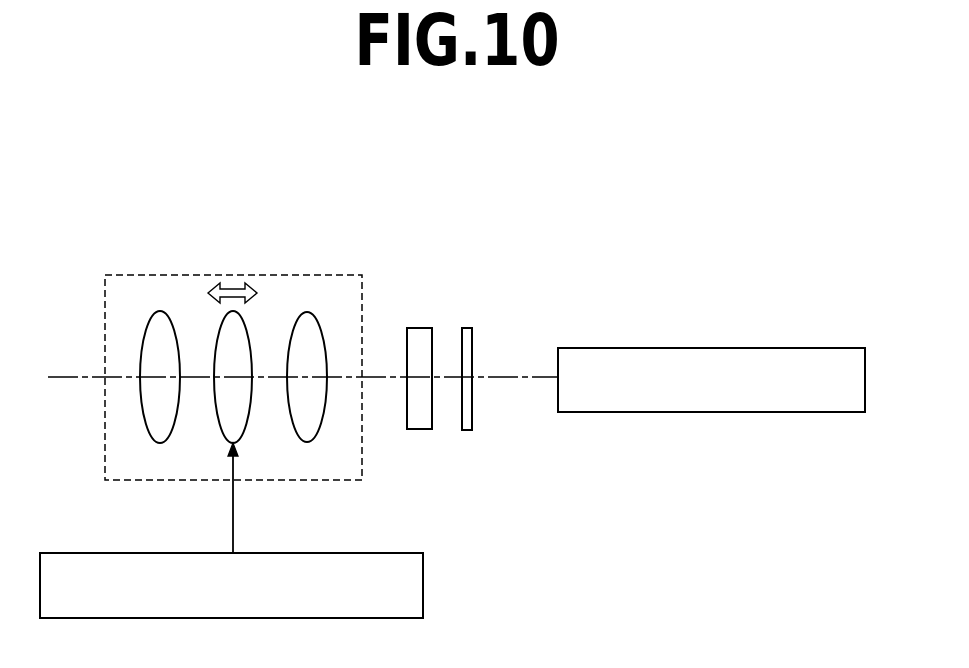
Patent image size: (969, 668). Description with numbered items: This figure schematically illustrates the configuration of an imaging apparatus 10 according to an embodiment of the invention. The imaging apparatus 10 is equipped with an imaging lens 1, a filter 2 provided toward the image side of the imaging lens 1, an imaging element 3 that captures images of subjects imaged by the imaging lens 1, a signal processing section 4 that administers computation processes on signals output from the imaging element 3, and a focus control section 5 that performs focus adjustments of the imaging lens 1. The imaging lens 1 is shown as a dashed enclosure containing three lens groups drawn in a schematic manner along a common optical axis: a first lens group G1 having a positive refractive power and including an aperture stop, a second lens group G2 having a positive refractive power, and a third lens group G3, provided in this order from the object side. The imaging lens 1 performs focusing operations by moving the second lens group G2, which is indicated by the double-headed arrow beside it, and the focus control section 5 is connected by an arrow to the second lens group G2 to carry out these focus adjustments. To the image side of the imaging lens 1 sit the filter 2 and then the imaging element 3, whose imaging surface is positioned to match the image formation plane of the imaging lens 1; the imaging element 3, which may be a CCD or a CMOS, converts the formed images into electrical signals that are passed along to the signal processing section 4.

The imaging apparatus 10 is at (348, 194).
The imaging lens 1 is at (105, 462).
The first lens group G1 is at (158, 311).
The second lens group G2 is at (214, 350).
The third lens group G3 is at (308, 311).
The filter 2 is at (422, 328).
The imaging element 3 is at (467, 328).
The signal processing section 4 is at (847, 348).
The focus control section 5 is at (405, 620).